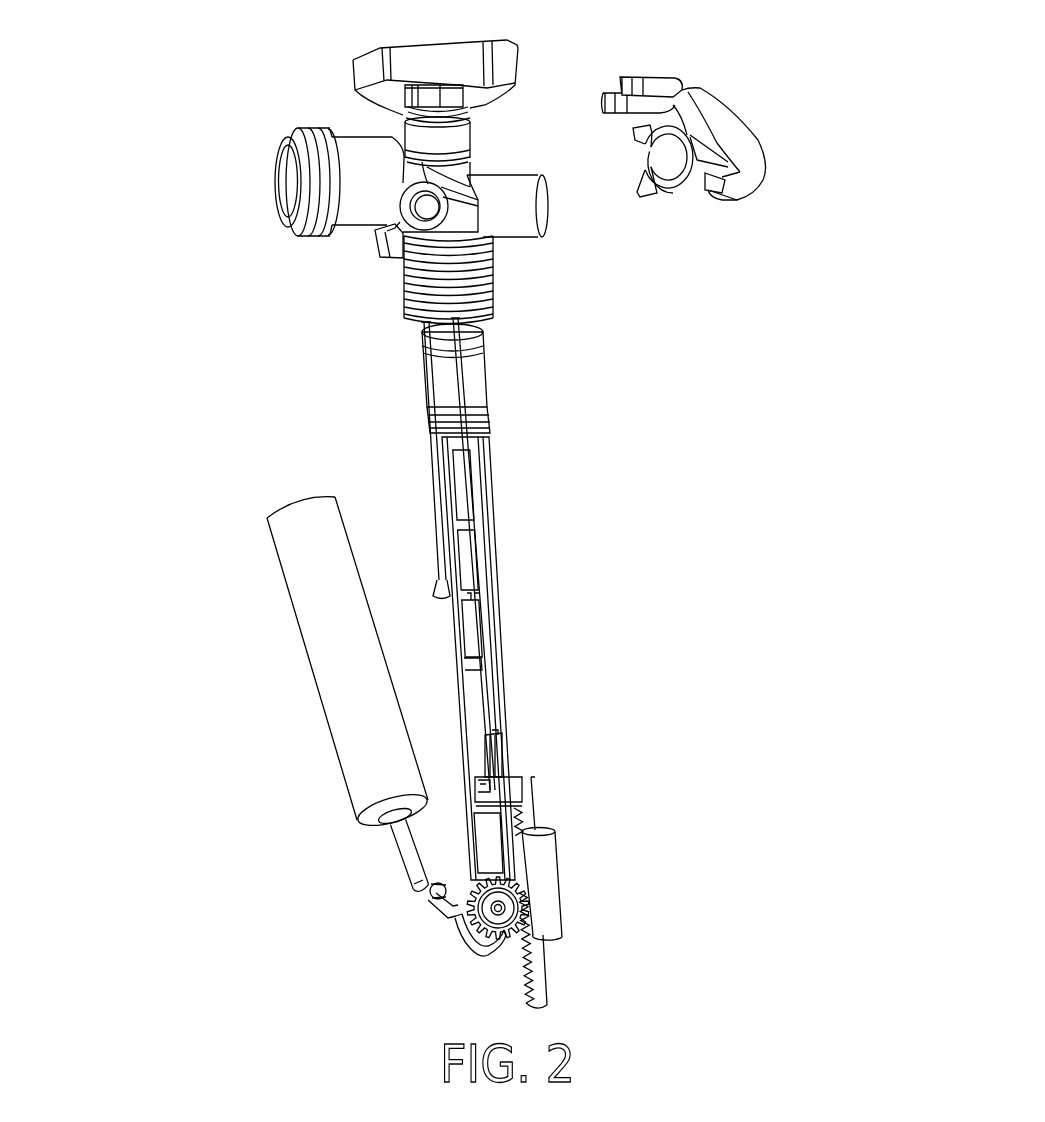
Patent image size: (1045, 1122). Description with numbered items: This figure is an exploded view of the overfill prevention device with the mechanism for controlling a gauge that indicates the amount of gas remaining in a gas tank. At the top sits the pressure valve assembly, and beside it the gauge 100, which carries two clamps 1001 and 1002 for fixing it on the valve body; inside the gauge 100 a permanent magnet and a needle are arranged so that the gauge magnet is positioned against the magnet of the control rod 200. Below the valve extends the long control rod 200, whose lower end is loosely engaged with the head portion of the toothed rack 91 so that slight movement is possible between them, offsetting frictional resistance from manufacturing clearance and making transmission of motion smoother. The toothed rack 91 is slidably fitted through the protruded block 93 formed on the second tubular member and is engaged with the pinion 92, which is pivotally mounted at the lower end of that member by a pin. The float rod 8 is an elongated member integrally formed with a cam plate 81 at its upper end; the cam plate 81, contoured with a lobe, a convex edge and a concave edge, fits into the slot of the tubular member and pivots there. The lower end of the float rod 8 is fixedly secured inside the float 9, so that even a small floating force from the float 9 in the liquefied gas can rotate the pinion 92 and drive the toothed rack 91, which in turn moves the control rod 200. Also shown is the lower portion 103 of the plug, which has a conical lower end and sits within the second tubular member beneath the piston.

The gauge 100 is at (743, 160).
The clamp 1001 is at (653, 87).
The clamp 1002 is at (648, 188).
The control rod 200 is at (480, 563).
The lower portion 103 is at (478, 758).
The float 9 is at (355, 730).
The float rod 8 is at (400, 852).
The pinion 92 is at (495, 917).
The cam plate 81 is at (493, 932).
The protruded block 93 is at (547, 873).
The toothed rack 91 is at (540, 973).